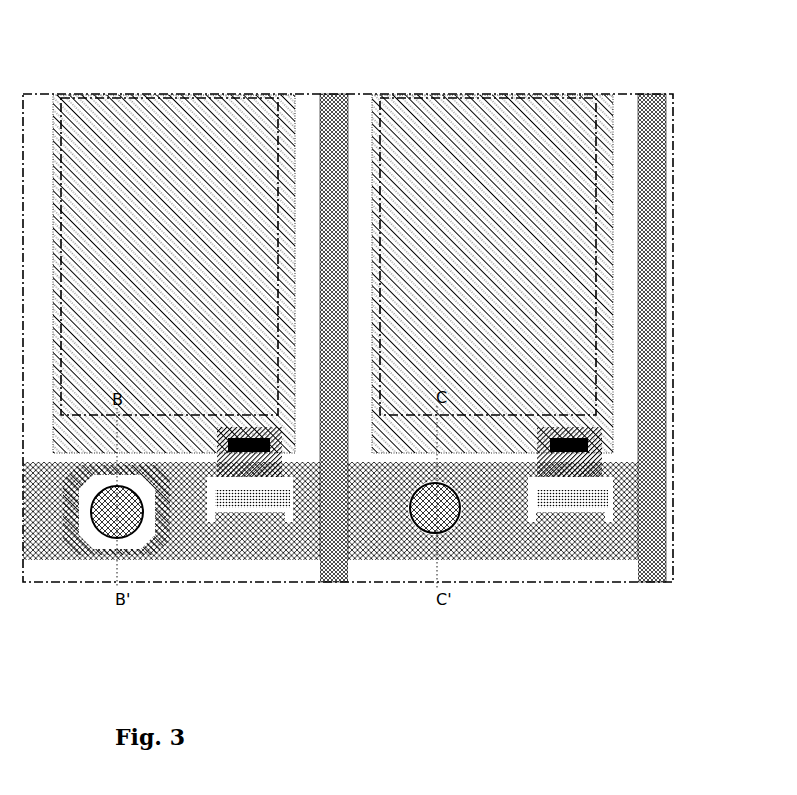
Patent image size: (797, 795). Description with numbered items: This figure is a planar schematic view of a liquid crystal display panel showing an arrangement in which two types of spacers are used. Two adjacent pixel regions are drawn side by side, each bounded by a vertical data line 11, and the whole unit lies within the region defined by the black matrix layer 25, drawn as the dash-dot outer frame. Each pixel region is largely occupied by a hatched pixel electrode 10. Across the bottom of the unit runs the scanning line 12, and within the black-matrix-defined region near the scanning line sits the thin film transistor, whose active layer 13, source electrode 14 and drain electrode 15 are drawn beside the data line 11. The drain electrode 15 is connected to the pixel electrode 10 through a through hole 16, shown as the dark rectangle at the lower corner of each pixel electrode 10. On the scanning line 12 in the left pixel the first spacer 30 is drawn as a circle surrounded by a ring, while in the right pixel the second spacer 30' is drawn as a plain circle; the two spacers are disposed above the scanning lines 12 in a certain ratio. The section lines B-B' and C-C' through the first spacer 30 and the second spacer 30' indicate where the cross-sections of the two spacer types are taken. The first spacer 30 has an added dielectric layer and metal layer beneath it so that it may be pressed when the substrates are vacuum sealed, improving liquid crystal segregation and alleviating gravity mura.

The pixel electrode 10 is at (162, 120).
The data lines 11 is at (337, 95).
The scanning lines 12 is at (508, 562).
The active layer 13 is at (680, 505).
The source electrode 14 is at (583, 562).
The drain electrode 15 is at (677, 480).
The through hole 16 is at (605, 433).
The black matrix layer 25 is at (677, 195).
The first spacer 30 is at (114, 549).
The second spacer 30' is at (425, 558).